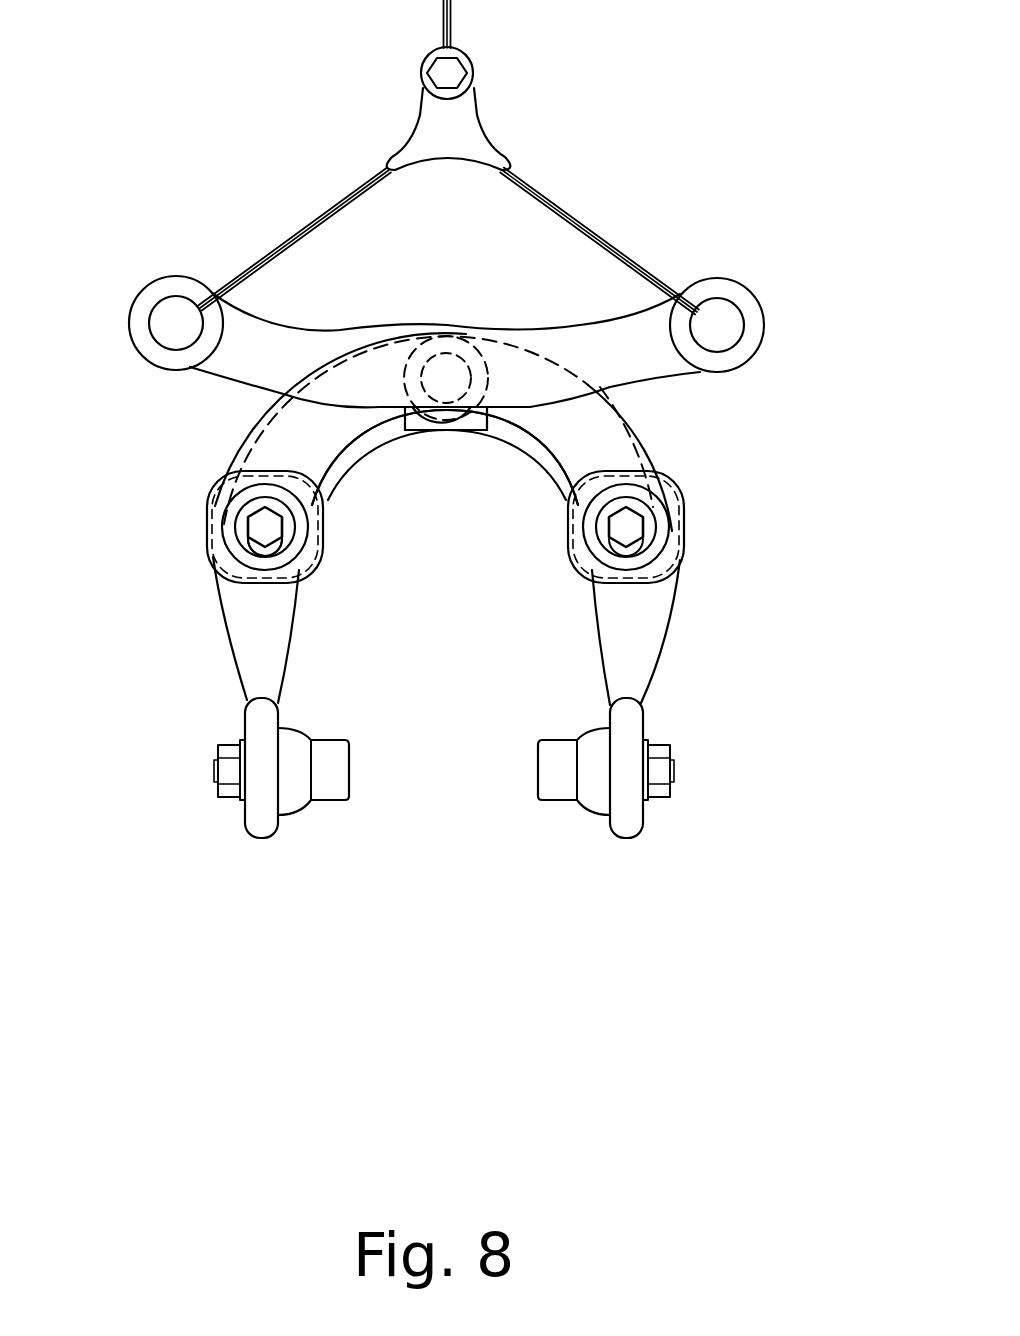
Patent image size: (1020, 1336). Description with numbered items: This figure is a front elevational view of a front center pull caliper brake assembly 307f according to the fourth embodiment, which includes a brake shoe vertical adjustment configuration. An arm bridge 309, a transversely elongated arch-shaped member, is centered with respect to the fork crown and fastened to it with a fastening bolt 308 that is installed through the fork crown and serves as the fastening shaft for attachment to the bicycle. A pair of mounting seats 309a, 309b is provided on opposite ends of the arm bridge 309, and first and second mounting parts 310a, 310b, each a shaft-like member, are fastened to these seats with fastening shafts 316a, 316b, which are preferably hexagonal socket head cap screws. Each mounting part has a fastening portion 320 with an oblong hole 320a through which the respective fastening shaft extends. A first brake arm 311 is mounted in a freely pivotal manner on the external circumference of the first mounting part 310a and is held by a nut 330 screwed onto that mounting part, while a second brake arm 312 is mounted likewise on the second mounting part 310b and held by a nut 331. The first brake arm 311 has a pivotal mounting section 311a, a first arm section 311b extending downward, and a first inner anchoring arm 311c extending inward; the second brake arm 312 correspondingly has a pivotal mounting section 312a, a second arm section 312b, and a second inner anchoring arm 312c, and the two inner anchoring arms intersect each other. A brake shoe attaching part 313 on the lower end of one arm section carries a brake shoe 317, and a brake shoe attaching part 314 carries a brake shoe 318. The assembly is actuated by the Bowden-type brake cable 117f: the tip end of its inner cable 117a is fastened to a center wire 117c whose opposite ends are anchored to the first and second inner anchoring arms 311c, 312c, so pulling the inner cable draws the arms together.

The inner cable 117a is at (450, 27).
The center wire 117c is at (478, 131).
The Bowden-type brake cable 117f is at (618, 85).
The center pull caliper brake assembly 307f is at (620, 283).
The fastening bolt 308 is at (449, 362).
The arm bridge 309 is at (414, 341).
The mounting seat 309a is at (206, 532).
The mounting seat 309b is at (668, 493).
The first mounting part 310a is at (296, 538).
The second mounting part 310b is at (545, 534).
The first brake arm 311 is at (212, 450).
The pivotal mounting section 311a is at (228, 476).
The first arm section 311b is at (250, 680).
The first inner anchoring arm 311c is at (287, 422).
The second brake arm 312 is at (675, 438).
The pivotal mounting section 312a is at (688, 508).
The second arm section 312b is at (643, 667).
The second inner anchoring arm 312c is at (318, 340).
The brake shoe attaching part 313 is at (267, 817).
The brake shoe attaching part 314 is at (622, 820).
The fastening shaft 316a is at (266, 585).
The fastening shaft 316b is at (622, 563).
The brake shoe 317 is at (298, 772).
The brake shoe 318 is at (587, 780).
The fastening portion 320 is at (290, 560).
The oblong hole 320a is at (247, 535).
The nut 330 is at (328, 482).
The nut 331 is at (682, 548).